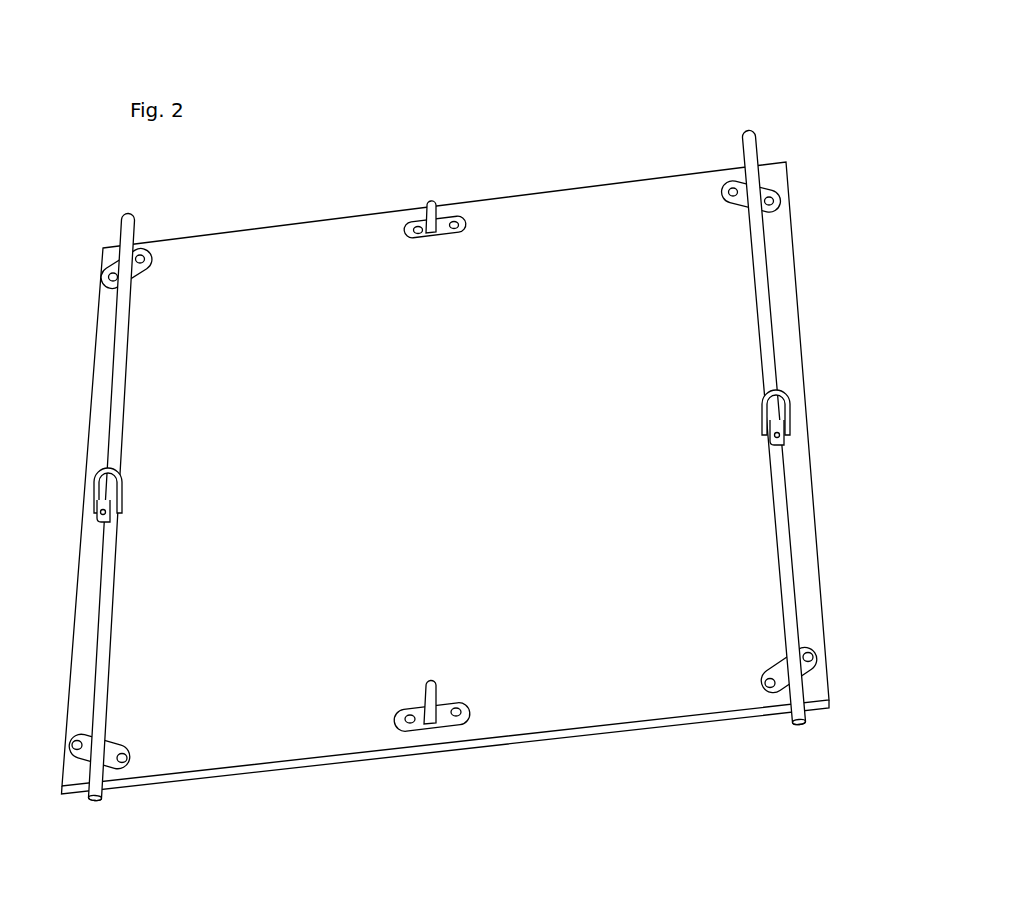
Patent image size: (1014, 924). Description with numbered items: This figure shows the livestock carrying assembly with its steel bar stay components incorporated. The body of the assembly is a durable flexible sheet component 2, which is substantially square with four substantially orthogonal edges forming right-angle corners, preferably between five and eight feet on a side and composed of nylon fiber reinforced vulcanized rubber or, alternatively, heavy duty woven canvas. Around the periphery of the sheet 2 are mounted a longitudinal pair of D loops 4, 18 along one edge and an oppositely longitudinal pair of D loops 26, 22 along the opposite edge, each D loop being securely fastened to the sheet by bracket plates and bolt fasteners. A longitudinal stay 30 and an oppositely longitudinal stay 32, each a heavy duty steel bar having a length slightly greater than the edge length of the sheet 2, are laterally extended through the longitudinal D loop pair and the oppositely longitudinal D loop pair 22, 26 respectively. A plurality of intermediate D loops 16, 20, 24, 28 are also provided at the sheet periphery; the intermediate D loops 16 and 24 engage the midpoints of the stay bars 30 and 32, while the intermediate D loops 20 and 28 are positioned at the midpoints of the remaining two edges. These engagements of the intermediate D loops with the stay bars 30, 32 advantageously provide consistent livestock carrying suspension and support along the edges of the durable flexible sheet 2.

The durable flexible sheet component 2 is at (552, 248).
The D loop 4 is at (113, 733).
The intermediate D loop 16 is at (94, 484).
The D loop 18 is at (140, 250).
The intermediate D loop 20 is at (435, 205).
The D loop 22 is at (740, 188).
The intermediate D loop 24 is at (782, 404).
The D loop 26 is at (780, 655).
The intermediate D loop 28 is at (462, 722).
The longitudinal stay 30 is at (122, 368).
The oppositely longitudinal stay 32 is at (787, 558).